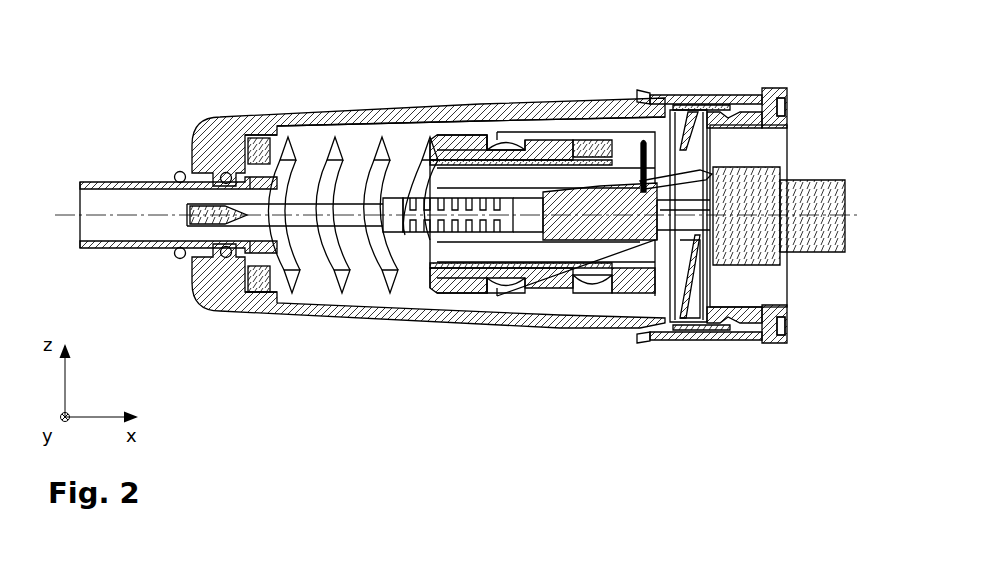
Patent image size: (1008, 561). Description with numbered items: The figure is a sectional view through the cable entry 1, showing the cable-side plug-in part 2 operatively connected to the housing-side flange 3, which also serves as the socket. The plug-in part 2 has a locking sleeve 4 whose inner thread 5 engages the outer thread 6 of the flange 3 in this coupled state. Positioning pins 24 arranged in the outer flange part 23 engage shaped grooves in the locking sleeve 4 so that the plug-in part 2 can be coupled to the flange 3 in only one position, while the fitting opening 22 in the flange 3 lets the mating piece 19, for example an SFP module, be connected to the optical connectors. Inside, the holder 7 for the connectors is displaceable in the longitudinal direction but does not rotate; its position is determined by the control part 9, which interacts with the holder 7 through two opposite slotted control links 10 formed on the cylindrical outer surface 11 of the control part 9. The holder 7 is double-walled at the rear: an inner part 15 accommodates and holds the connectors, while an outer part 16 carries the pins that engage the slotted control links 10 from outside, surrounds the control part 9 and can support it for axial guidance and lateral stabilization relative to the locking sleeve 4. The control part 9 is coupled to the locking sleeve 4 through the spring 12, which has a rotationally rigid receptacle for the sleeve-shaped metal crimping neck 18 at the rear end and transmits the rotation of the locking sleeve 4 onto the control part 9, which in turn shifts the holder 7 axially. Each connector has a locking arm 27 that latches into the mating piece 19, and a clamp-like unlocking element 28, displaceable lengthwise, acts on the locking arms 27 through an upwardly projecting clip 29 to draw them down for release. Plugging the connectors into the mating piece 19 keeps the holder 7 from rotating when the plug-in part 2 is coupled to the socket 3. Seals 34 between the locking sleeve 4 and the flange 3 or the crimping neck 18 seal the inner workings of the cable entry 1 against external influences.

The cable entry 1 is at (197, 87).
The cable-side plug-in part 2 is at (300, 98).
The housing-side flange 3 is at (808, 74).
The locking sleeve 4 is at (380, 108).
The inner thread 5 is at (700, 112).
The outer thread 6 is at (728, 118).
The holder 7 is at (683, 340).
The control part 9 is at (440, 290).
The slotted control links 10 is at (578, 135).
The cylindrical outer surface 11 is at (473, 290).
The spring 12 is at (338, 300).
The inner part 15 is at (460, 140).
The outer part 16 is at (623, 297).
The crimping neck 18 is at (127, 181).
The mating piece 19 is at (793, 232).
The fitting opening 22 is at (770, 150).
The outer flange part 23 is at (728, 334).
The positioning pins 24 is at (668, 110).
The locking arm 27 is at (787, 112).
The unlocking element 28 is at (610, 145).
The clip 29 is at (643, 138).
The seals 34 is at (230, 258).